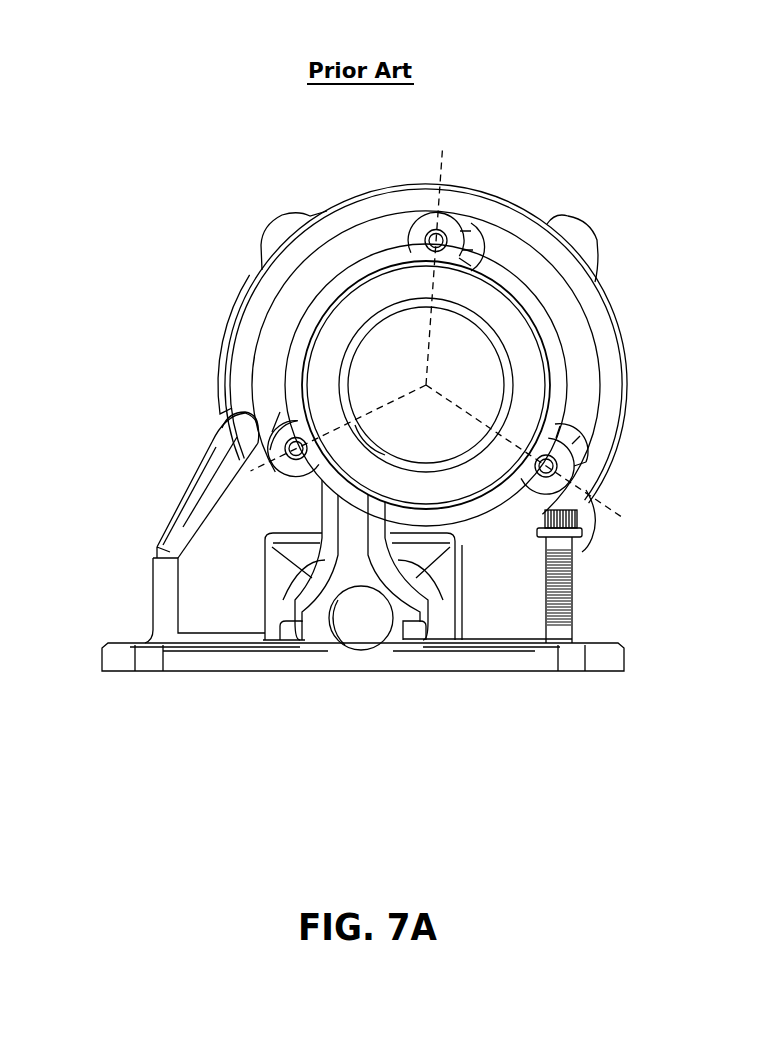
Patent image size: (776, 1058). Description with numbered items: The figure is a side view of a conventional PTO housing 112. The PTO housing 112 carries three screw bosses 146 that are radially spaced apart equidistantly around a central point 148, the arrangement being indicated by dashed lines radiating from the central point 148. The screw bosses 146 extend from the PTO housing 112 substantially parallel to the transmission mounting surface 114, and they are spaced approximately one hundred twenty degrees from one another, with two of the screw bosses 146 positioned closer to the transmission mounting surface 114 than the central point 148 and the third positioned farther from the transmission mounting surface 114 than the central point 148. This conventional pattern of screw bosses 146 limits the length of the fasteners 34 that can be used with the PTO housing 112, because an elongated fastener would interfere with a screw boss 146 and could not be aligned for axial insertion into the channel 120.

The conventional PTO housing 112 is at (598, 282).
The screw bosses 146 is at (441, 231).
The central point 148 is at (426, 385).
The fasteners 34 is at (572, 578).
The channel 120 is at (580, 647).
The transmission mounting surface 114 is at (480, 672).